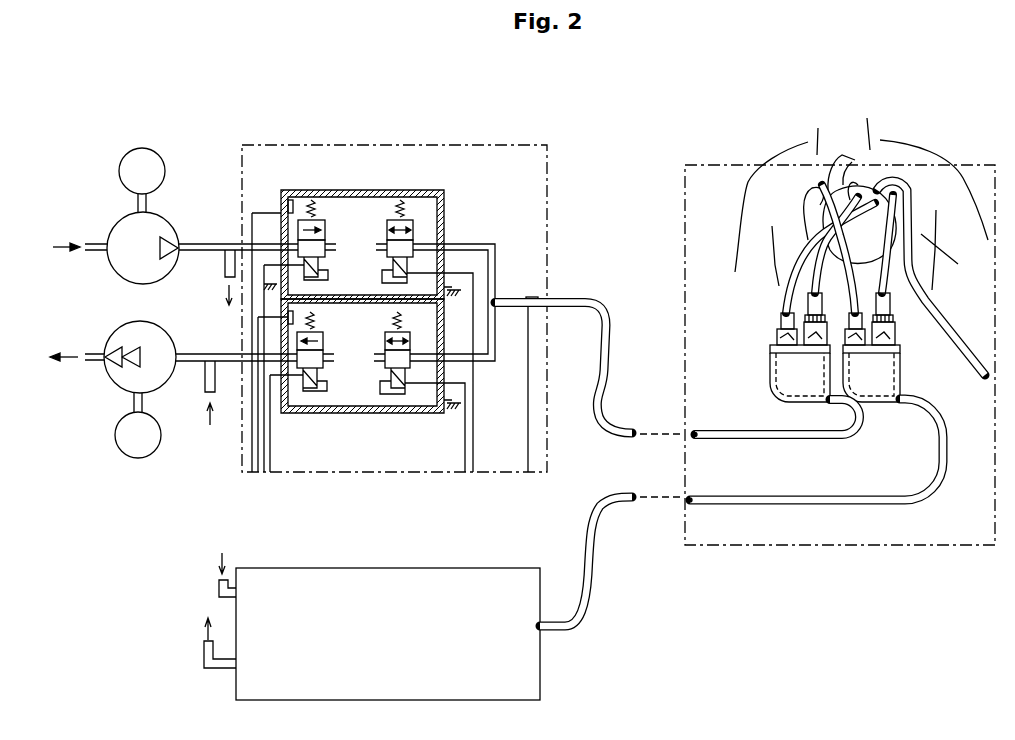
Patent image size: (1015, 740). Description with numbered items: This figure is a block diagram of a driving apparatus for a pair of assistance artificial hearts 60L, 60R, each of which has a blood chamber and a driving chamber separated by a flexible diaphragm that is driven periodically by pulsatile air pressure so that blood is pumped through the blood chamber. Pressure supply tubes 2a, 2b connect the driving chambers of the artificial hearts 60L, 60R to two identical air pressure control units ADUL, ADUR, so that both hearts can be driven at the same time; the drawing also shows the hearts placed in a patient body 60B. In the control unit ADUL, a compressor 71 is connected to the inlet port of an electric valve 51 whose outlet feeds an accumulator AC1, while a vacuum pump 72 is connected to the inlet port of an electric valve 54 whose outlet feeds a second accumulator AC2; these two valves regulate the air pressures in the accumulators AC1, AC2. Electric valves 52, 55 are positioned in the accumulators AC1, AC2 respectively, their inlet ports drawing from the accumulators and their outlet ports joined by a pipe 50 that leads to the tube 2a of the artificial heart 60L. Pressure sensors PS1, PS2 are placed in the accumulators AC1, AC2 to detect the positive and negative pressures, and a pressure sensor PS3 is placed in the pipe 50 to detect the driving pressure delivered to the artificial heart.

The compressor 71 is at (112, 265).
The vacuum pump 72 is at (108, 373).
The air pressure control unit ADUL is at (444, 145).
The air pressure control unit ADUR is at (390, 568).
The accumulator AC1 is at (380, 202).
The accumulator AC2 is at (368, 400).
The pressure sensor PS1 is at (296, 200).
The pressure sensor PS2 is at (296, 312).
The pressure sensor PS3 is at (530, 297).
The electric valve 51 is at (330, 226).
The electric valve 52 is at (382, 258).
The electric valve 54 is at (332, 356).
The electric valve 55 is at (384, 368).
The pipe 50 is at (495, 336).
The artificial heart 60L is at (772, 376).
The artificial heart 60R is at (900, 380).
The patient body with cannulae 60B is at (928, 250).
The pressure supply tube 2a is at (758, 441).
The pressure supply tube 2b is at (762, 506).